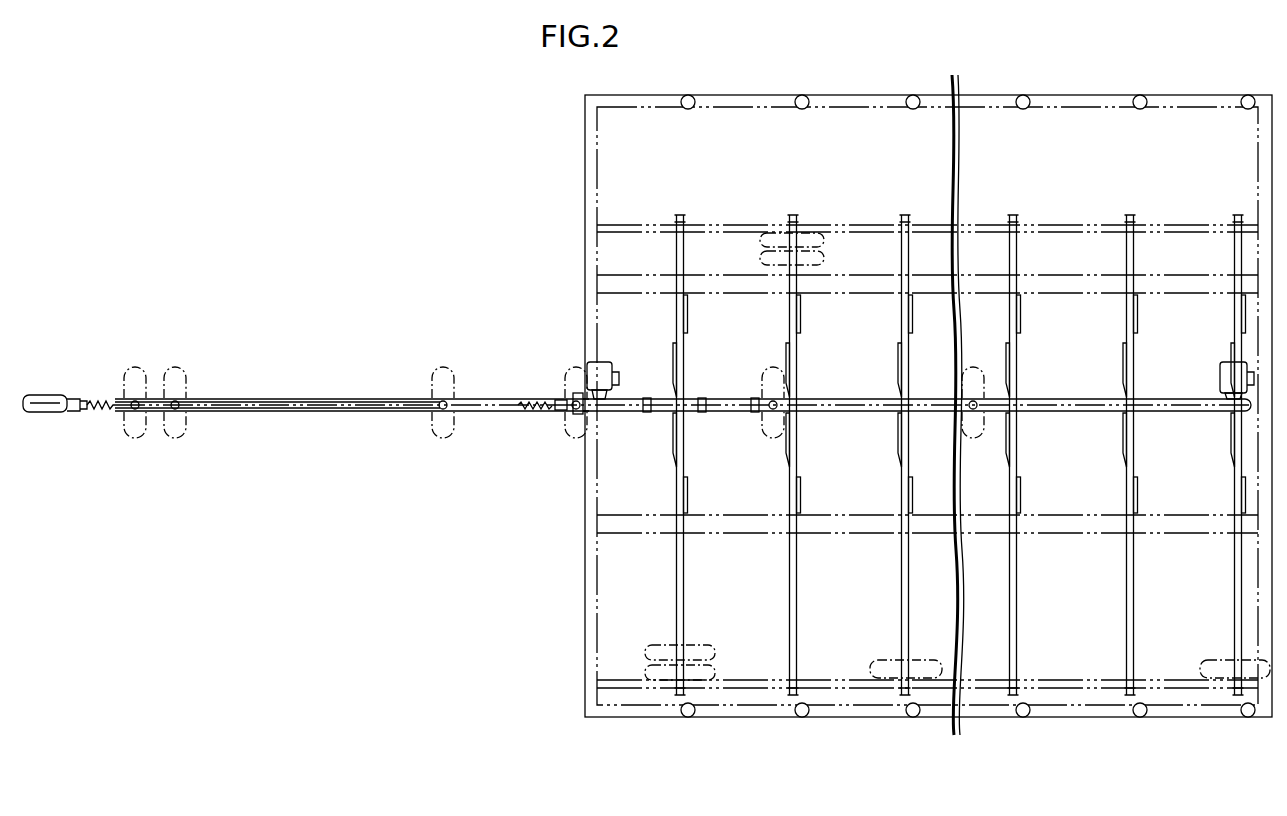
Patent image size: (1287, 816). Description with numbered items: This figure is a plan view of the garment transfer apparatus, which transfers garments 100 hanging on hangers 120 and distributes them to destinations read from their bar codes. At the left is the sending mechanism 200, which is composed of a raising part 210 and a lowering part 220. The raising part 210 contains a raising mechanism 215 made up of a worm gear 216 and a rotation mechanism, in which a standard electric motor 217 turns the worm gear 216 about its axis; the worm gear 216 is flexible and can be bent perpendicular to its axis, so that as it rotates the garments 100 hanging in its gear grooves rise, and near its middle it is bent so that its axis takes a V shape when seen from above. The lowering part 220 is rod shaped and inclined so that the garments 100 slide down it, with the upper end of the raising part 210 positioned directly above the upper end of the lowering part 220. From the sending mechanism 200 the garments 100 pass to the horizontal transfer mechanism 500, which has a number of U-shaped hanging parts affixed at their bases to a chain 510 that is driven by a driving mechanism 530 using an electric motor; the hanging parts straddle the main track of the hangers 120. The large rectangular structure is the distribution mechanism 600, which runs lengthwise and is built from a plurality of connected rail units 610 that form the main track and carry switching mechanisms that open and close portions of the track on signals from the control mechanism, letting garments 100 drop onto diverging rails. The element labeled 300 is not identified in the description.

The garments 100 is at (572, 430).
The hangers 120 is at (760, 413).
The sending mechanism 200 is at (637, 406).
The raising part 210 is at (502, 397).
The raising mechanism 215 is at (335, 416).
The worm gear 216 is at (522, 400).
The electric motor 217 is at (50, 415).
The lowering part 220 is at (566, 422).
The bearing block 300 is at (589, 425).
The horizontal transfer mechanism 500 is at (860, 420).
The chain 510 is at (622, 395).
The driving mechanism 530 is at (597, 362).
The distribution mechanism 600 is at (900, 722).
The rail units 610 is at (825, 411).